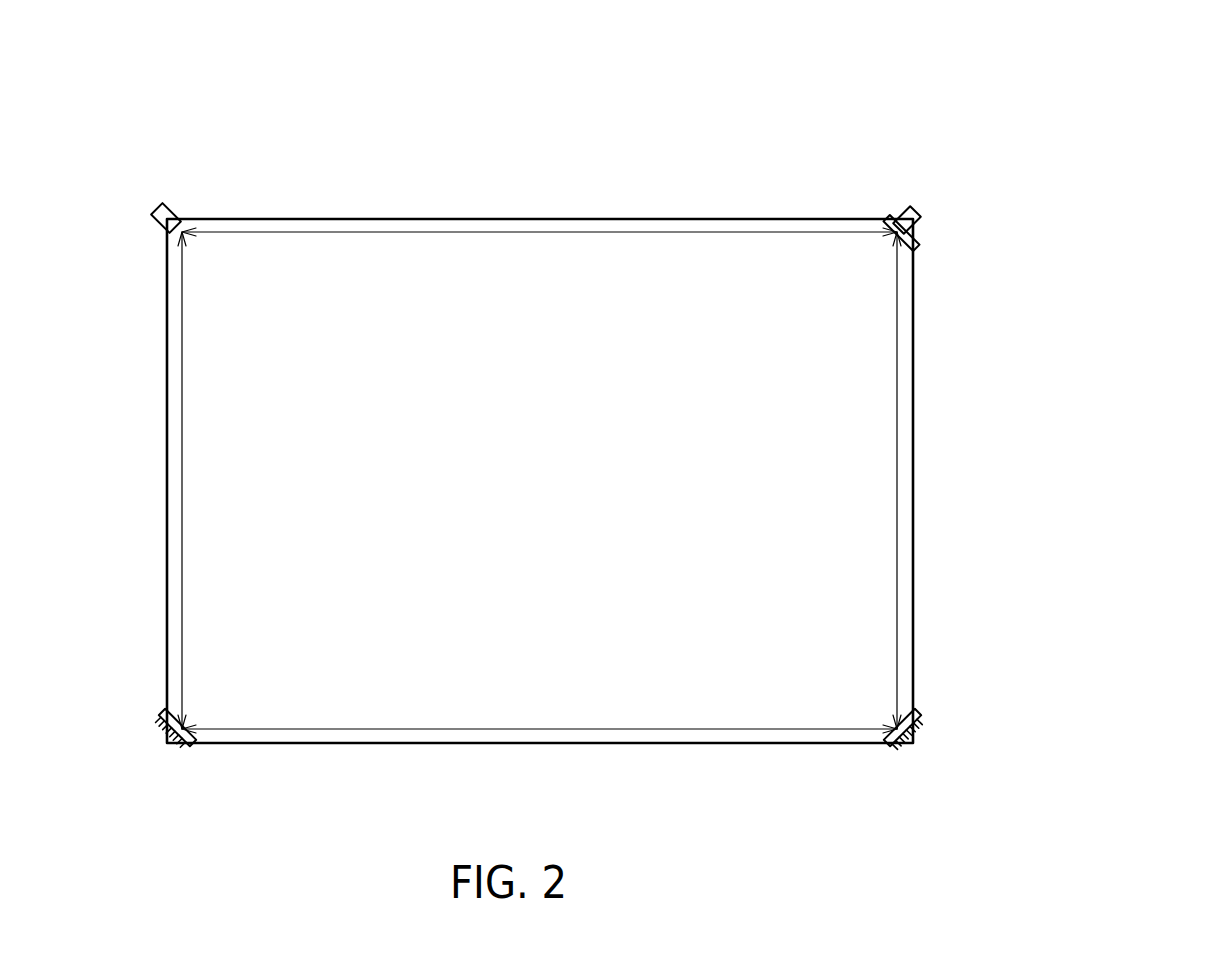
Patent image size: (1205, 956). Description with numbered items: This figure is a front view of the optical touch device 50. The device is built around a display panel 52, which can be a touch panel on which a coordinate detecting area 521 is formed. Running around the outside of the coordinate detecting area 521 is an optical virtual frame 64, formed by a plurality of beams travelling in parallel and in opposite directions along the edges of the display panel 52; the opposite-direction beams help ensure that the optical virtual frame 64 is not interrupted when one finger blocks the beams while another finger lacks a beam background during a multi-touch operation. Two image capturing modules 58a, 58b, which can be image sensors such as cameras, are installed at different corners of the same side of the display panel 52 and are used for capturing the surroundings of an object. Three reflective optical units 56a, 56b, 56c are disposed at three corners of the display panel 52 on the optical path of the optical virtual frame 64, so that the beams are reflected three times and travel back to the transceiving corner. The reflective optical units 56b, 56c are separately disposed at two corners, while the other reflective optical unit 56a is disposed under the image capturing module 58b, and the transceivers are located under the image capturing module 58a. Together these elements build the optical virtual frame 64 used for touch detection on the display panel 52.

The optical touch device 50 is at (1100, 125).
The display panel 52 is at (925, 327).
The coordinate detecting area 521 is at (865, 374).
The optical virtual frame 64 is at (897, 472).
The image capturing module 58a is at (158, 211).
The image capturing module 58b is at (926, 212).
The reflective optical unit 56a is at (920, 246).
The reflective optical unit 56b is at (890, 744).
The reflective optical unit 56c is at (197, 744).